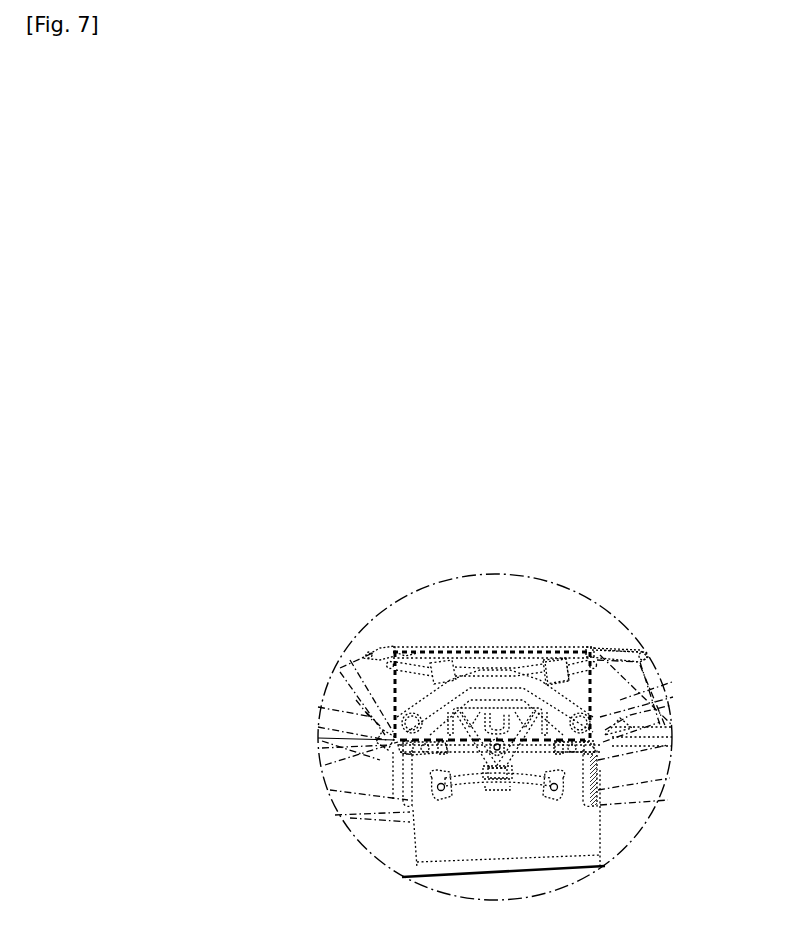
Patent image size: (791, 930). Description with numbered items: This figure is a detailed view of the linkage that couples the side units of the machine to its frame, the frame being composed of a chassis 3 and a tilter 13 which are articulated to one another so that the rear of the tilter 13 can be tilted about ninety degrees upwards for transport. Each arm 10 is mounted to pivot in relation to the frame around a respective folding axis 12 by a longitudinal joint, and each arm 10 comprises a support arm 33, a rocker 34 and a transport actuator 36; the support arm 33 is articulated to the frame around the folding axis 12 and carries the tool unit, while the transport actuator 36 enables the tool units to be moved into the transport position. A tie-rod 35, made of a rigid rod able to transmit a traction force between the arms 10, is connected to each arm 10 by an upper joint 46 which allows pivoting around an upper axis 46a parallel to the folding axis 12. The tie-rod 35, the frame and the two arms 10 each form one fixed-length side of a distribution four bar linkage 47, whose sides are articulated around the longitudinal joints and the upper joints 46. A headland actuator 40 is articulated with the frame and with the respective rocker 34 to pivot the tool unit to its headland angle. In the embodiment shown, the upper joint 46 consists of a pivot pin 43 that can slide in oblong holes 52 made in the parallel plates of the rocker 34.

The chassis 3 is at (518, 754).
The arm 10 is at (677, 689).
The folding axis 12 is at (597, 740).
The tilter 13 is at (485, 707).
The support arm 33 is at (614, 726).
The rocker 34 is at (610, 680).
The tie-rod 35 is at (487, 658).
The transport actuator 36 is at (647, 659).
The headland actuator 40 is at (552, 672).
The pivot pin 43 is at (657, 634).
The upper joint 46 is at (588, 651).
The upper axis 46a is at (590, 652).
The distribution four bar linkage 47 is at (396, 697).
The oblong hole 52 is at (383, 658).